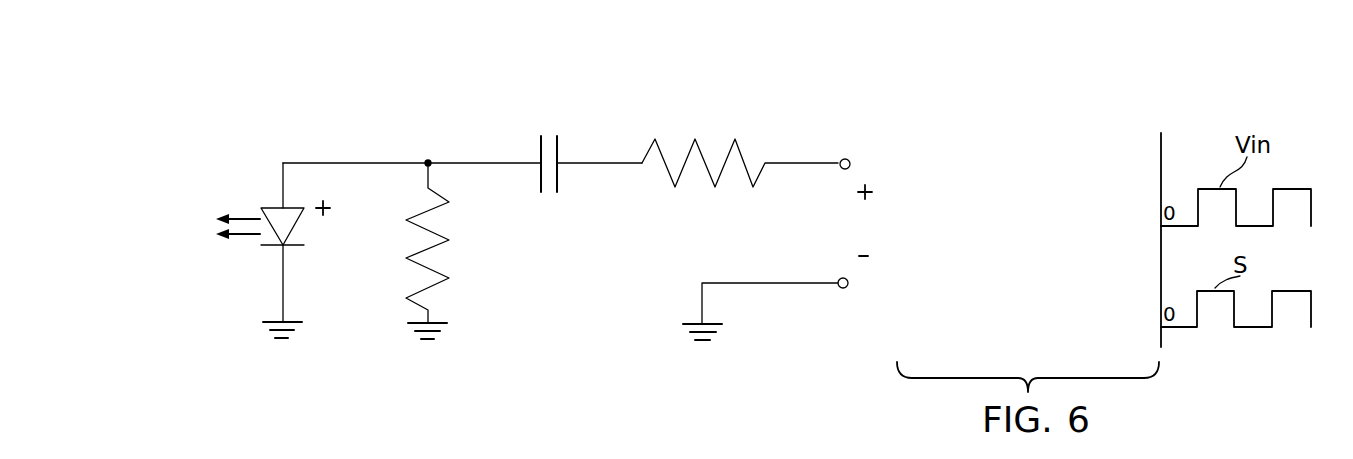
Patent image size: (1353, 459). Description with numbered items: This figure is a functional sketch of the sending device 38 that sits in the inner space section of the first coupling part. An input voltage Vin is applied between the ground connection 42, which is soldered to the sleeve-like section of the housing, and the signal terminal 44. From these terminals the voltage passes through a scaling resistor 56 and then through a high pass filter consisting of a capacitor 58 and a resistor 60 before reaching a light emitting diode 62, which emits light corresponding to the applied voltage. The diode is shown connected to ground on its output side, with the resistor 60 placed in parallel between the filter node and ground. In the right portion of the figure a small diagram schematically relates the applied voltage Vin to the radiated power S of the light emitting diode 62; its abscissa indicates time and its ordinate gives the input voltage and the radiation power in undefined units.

The sending device 38 is at (771, 96).
The ground connection 42 is at (843, 288).
The signal terminal 44 is at (850, 160).
The scaling resistor 56 is at (695, 139).
The capacitor 58 is at (538, 145).
The resistor 60 is at (438, 247).
The light emitting diode 62 is at (273, 205).